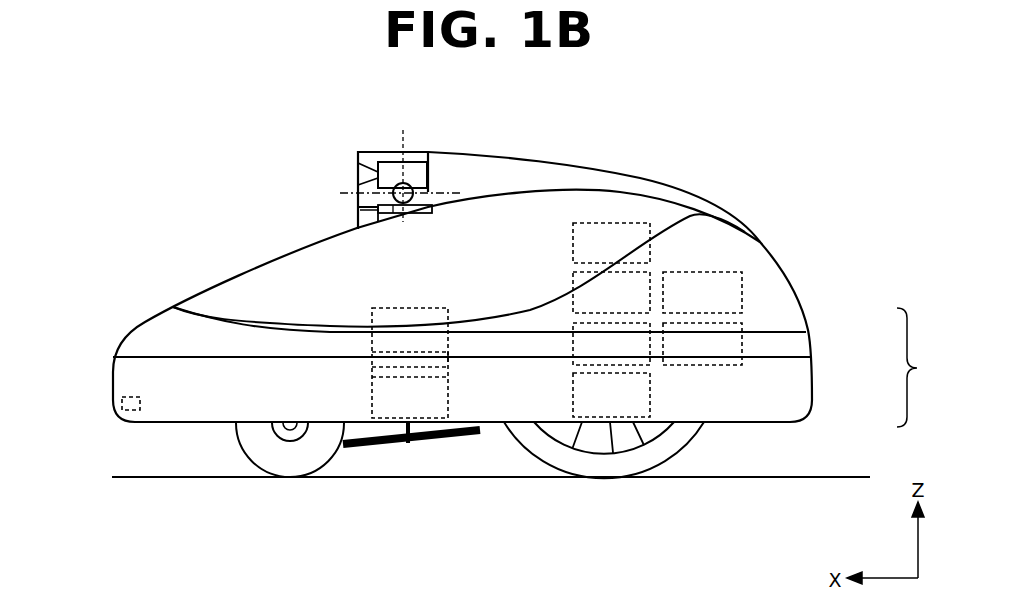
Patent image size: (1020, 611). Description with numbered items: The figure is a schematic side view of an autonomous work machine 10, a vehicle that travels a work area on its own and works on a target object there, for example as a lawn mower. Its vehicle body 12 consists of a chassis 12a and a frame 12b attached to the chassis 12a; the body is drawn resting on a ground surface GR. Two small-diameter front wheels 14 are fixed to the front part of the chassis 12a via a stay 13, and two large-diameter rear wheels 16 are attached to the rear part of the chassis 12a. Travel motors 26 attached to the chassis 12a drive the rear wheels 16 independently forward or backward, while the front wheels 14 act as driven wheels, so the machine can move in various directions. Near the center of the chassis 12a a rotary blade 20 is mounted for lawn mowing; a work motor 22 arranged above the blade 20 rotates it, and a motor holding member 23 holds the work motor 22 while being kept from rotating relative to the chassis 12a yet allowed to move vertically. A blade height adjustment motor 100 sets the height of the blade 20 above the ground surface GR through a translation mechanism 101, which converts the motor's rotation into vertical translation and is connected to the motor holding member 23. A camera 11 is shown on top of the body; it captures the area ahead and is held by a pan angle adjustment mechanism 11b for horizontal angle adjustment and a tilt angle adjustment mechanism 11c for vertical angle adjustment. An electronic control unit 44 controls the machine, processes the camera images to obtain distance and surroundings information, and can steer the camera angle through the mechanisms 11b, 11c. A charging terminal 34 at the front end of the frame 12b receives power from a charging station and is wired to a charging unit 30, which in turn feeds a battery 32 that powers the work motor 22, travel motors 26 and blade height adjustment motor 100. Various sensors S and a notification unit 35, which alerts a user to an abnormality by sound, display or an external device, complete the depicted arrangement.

The autonomous work machine 10 is at (770, 220).
The camera 11 is at (432, 148).
The pan angle adjustment mechanism 11b is at (358, 210).
The tilt angle adjustment mechanism 11c is at (413, 188).
The vehicle body 12 is at (927, 367).
The chassis 12a is at (782, 387).
The frame 12b is at (775, 310).
The stay 13 is at (280, 432).
The front wheels 14 is at (300, 455).
The rear wheels 16 is at (592, 460).
The blade 20 is at (408, 443).
The work motor 22 is at (372, 398).
The motor holding member 23 is at (372, 372).
The travel motors 26 is at (573, 403).
The charging unit 30 is at (700, 272).
The battery 32 is at (703, 365).
The charging terminal 34 is at (122, 403).
The notification unit 35 is at (573, 242).
The electronic control unit (ECU) 44 is at (575, 306).
The blade height adjustment motor 100 is at (408, 308).
The translation mechanism 101 is at (448, 357).
The sensors S is at (572, 345).
The ground surface GR is at (503, 477).